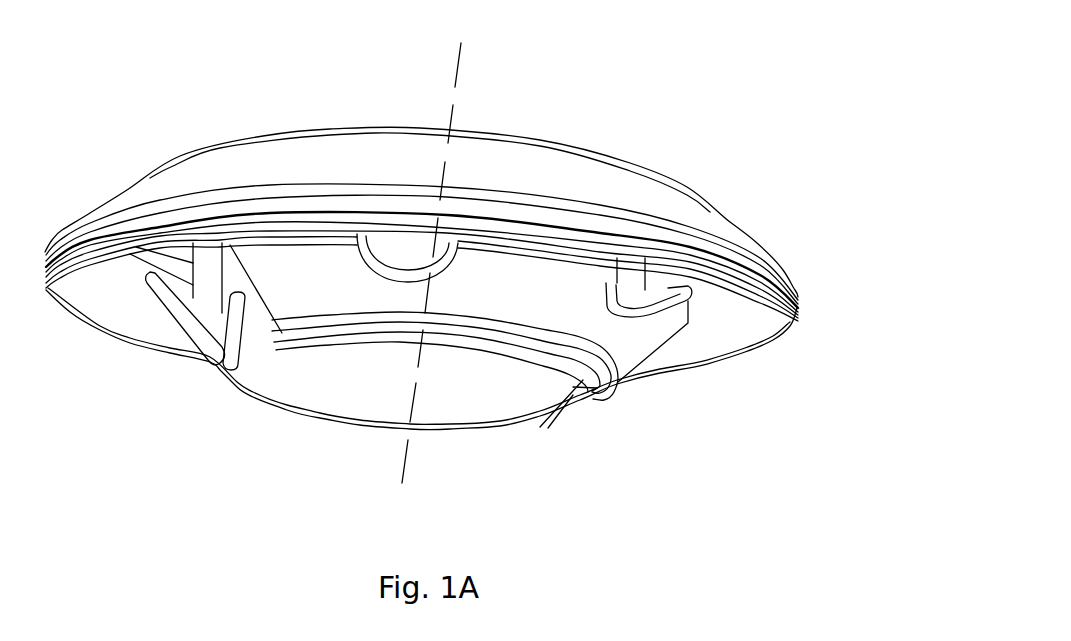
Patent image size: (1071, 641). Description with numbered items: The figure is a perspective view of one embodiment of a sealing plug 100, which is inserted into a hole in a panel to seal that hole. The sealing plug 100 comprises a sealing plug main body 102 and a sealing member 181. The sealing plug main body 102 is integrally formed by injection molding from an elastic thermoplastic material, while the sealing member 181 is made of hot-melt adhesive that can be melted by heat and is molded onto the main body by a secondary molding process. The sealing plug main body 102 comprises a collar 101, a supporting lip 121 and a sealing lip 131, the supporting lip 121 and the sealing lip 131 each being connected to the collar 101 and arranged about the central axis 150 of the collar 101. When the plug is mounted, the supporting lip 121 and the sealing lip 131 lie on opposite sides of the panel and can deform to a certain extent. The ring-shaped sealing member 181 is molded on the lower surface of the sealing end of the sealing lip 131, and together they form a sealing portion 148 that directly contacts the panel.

The sealing plug 100 is at (457, 277).
The collar 101 is at (402, 363).
The sealing plug main body 102 is at (717, 222).
The supporting lip 121 is at (533, 297).
The sealing lip 131 is at (703, 212).
The sealing portion 148 is at (785, 307).
The central axis 150 is at (469, 263).
The sealing member 181 is at (103, 293).